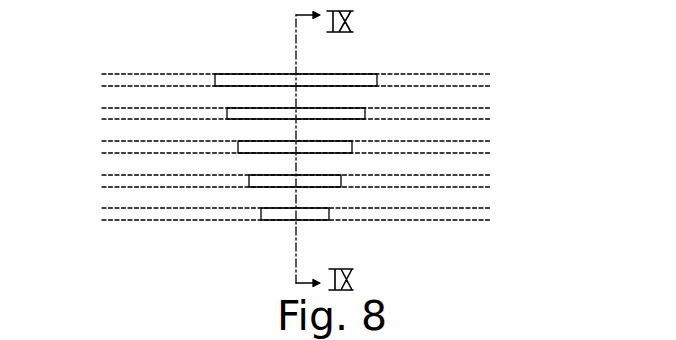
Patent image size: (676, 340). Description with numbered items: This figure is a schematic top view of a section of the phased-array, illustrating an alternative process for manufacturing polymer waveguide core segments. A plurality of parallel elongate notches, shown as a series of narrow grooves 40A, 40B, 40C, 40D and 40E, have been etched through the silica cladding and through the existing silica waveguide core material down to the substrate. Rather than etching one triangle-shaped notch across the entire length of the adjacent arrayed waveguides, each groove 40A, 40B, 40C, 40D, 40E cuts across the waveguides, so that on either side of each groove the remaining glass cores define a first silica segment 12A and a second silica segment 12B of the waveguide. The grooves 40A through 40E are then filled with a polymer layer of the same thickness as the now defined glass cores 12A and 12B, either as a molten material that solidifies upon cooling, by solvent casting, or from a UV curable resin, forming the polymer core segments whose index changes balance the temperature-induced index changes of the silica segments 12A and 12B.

The first segment 12A is at (124, 120).
The second segment 12B is at (465, 80).
The groove 40A is at (333, 80).
The groove 40B is at (353, 114).
The groove 40C is at (338, 146).
The groove 40D is at (270, 182).
The groove 40E is at (313, 213).